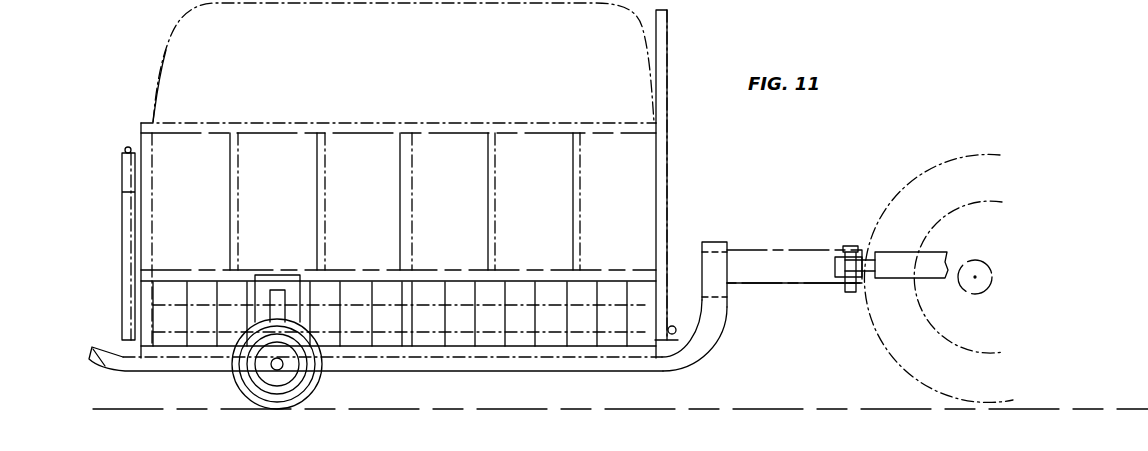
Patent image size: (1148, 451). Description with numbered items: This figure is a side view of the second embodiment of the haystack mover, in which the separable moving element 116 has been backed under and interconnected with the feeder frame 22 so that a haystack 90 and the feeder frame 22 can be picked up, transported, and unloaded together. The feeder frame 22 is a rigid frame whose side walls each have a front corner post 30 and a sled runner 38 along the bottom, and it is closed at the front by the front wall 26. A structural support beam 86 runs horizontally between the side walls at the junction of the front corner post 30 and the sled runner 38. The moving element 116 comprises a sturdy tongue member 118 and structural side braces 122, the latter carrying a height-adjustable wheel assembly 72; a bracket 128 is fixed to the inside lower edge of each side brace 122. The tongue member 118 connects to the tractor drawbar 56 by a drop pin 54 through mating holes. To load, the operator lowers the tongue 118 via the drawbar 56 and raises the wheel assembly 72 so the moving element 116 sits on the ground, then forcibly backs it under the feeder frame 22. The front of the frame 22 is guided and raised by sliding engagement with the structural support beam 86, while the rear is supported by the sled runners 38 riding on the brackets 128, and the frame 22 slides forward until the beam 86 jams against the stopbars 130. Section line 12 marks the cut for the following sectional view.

The section line of trailer 12 is at (637, 105).
The feeder frame 22 is at (678, 214).
The front wall 26 is at (668, 62).
The front corner post 30 is at (665, 158).
The sled runner 38 is at (713, 350).
The drop pin 54 is at (848, 246).
The drawbar 56 is at (851, 293).
The wheel assembly 72 is at (228, 380).
The structural support beam 86 is at (660, 358).
The haystack 90 is at (151, 98).
The moving element 116 is at (450, 375).
The tongue member 118 is at (764, 250).
The structural side brace 122 is at (508, 350).
The bracket 128 is at (383, 61).
The stopbar 130 is at (676, 325).